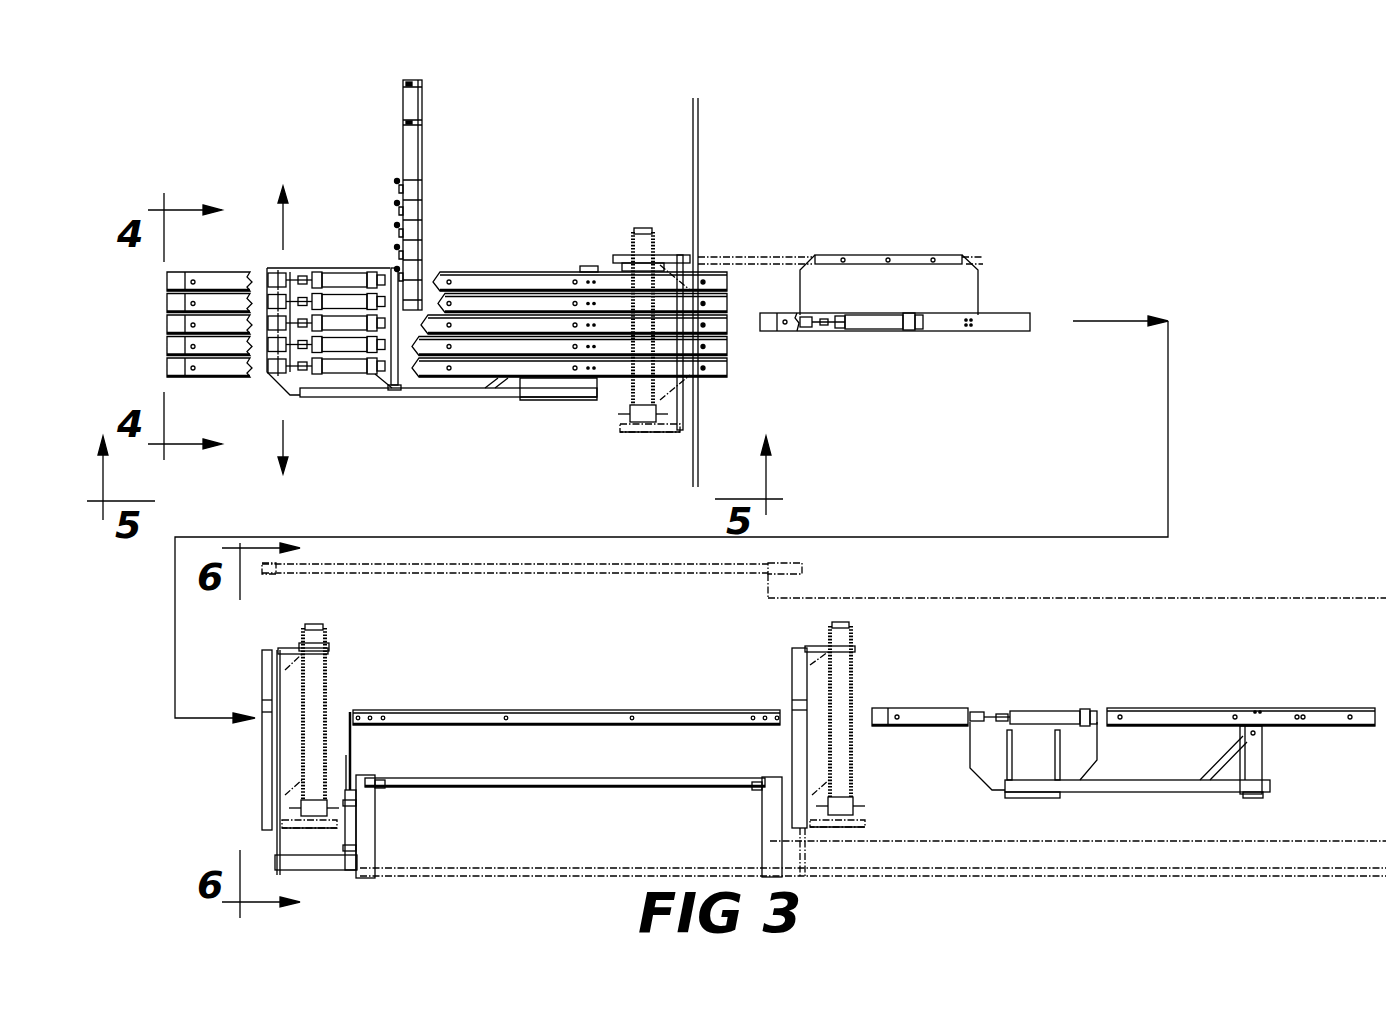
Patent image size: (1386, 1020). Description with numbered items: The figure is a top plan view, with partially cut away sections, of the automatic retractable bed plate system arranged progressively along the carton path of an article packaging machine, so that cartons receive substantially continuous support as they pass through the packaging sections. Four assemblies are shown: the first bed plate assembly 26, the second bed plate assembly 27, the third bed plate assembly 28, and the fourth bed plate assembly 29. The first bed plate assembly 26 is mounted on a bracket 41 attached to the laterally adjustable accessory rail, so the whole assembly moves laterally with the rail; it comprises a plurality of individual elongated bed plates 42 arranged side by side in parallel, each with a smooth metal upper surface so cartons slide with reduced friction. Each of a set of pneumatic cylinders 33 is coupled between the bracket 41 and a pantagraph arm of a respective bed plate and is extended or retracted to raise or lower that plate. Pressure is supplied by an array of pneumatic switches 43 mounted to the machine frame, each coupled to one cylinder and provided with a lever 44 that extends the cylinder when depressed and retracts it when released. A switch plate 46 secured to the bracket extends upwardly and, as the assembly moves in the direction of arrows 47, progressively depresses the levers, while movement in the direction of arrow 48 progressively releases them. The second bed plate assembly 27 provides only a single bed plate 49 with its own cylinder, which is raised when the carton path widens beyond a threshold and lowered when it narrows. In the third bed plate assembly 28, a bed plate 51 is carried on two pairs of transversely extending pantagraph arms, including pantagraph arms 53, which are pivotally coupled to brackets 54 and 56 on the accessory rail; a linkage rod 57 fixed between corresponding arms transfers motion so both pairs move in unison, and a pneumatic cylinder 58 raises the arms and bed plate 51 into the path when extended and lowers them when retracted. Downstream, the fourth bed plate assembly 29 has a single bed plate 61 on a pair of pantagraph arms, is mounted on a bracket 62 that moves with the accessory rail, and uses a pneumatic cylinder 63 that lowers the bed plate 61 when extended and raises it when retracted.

The first bed plate assembly 26 is at (506, 236).
The second bed plate assembly 27 is at (895, 362).
The third bed plate assembly 28 is at (507, 700).
The fourth bed plate assembly 29 is at (1170, 666).
The pneumatic cylinders 33 is at (345, 290).
The bracket 41 is at (458, 396).
The bed plates 42 is at (556, 300).
The pneumatic switches 43 is at (422, 272).
The lever 44 is at (394, 237).
The switch plate 46 is at (397, 387).
The arrow 47 is at (283, 225).
The arrow 48 is at (283, 428).
The bed plate 49 is at (1003, 317).
The bed plate 51 is at (667, 710).
The pantagraph arms 53 is at (355, 745).
The bracket 54 is at (762, 818).
The bracket 56 is at (376, 838).
The linkage rod 57 is at (582, 788).
The pneumatic cylinder 58 is at (350, 840).
The bed plate 61 is at (1213, 709).
The bracket 62 is at (1085, 765).
The pneumatic cylinder 63 is at (1046, 711).